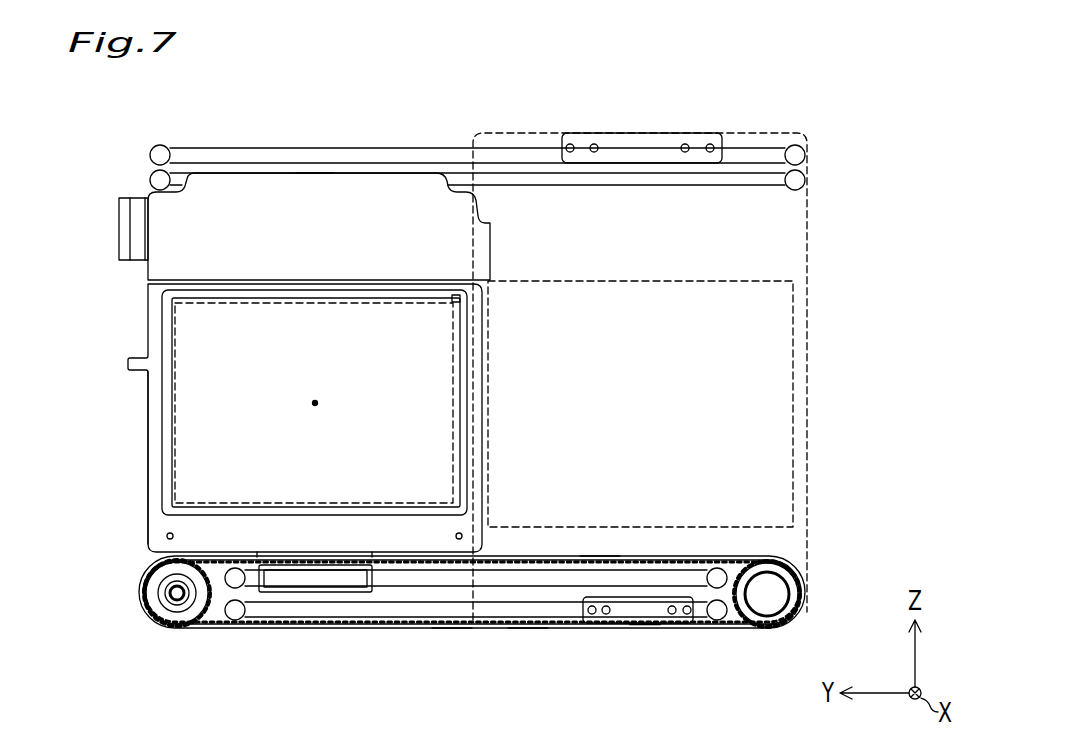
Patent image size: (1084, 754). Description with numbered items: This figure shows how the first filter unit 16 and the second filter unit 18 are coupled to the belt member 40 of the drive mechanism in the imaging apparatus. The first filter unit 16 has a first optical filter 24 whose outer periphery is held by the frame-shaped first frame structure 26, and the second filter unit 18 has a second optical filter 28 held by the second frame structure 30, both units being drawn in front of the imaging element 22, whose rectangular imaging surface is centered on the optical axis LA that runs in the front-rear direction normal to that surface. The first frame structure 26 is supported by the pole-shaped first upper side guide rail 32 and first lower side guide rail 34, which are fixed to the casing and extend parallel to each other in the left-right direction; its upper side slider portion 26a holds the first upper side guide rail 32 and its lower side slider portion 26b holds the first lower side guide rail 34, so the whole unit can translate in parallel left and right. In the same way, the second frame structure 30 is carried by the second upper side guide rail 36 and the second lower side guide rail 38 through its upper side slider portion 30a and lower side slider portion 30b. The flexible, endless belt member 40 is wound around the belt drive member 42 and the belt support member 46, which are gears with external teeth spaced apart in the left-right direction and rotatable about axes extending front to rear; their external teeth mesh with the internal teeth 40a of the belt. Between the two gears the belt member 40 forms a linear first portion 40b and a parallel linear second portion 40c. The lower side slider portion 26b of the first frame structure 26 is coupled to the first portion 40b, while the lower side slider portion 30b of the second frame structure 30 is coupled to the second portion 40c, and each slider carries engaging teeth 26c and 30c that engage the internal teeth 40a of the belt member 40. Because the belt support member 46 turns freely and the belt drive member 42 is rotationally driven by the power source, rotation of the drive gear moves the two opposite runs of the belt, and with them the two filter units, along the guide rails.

The first filter unit 16 is at (157, 242).
The second filter unit 18 is at (782, 237).
The imaging element 22 is at (267, 418).
The first optical filter 24 is at (330, 448).
The optical axis LA is at (313, 402).
The first frame structure 26 is at (330, 248).
The upper side slider portion 26a is at (311, 180).
The lower side slider portion 26b is at (313, 592).
The engaging teeth 26c is at (321, 562).
The second optical filter 28 is at (783, 330).
The second frame structure 30 is at (719, 383).
The upper side slider portion 30a is at (646, 142).
The lower side slider portion 30b is at (607, 616).
The engaging teeth 30c is at (651, 628).
The first upper side guide rail 32 is at (178, 174).
The first lower side guide rail 34 is at (552, 578).
The second upper side guide rail 36 is at (369, 152).
The second lower side guide rail 38 is at (400, 610).
The belt member 40 is at (441, 615).
The internal teeth 40a is at (452, 622).
The first portion 40b is at (600, 560).
The second portion 40c is at (528, 628).
The belt drive member 42 is at (790, 558).
The belt support member 46 is at (159, 574).